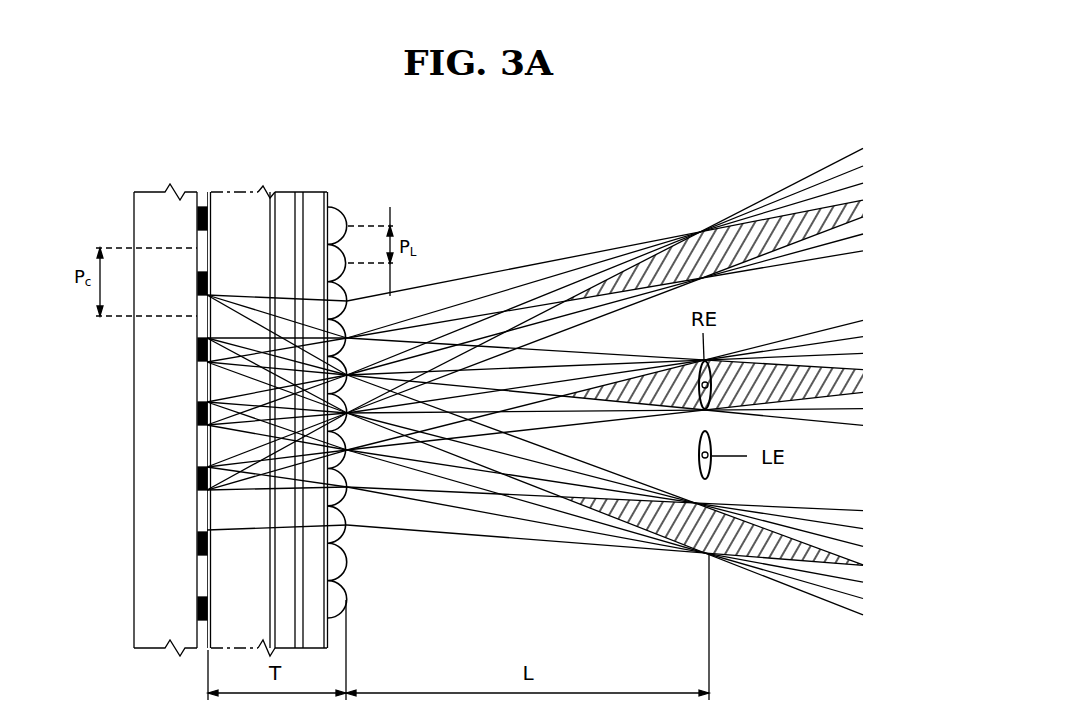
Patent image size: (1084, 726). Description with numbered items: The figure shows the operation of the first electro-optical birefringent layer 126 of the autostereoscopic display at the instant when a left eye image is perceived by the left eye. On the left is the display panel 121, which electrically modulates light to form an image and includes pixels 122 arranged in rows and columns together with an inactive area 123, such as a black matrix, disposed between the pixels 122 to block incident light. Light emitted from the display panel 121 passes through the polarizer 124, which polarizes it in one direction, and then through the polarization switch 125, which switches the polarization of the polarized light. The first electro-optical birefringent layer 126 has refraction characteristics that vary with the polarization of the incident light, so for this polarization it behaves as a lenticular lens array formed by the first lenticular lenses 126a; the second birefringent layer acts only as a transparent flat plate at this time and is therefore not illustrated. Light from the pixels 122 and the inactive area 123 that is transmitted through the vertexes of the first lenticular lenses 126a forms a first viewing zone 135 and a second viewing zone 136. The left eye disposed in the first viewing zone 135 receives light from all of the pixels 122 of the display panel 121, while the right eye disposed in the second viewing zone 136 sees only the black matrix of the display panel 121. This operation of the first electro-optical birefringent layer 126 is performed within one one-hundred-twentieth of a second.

The display panel 121 is at (135, 181).
The pixels 122 is at (198, 571).
The inactive area 123 is at (200, 609).
The polarizer 124 is at (272, 203).
The polarization switch 125 is at (302, 203).
The first electro-optical birefringent layer 126 is at (337, 210).
The first lenticular lenses 126a is at (347, 543).
The first viewing zone 135 is at (658, 322).
The second viewing zone 136 is at (693, 235).